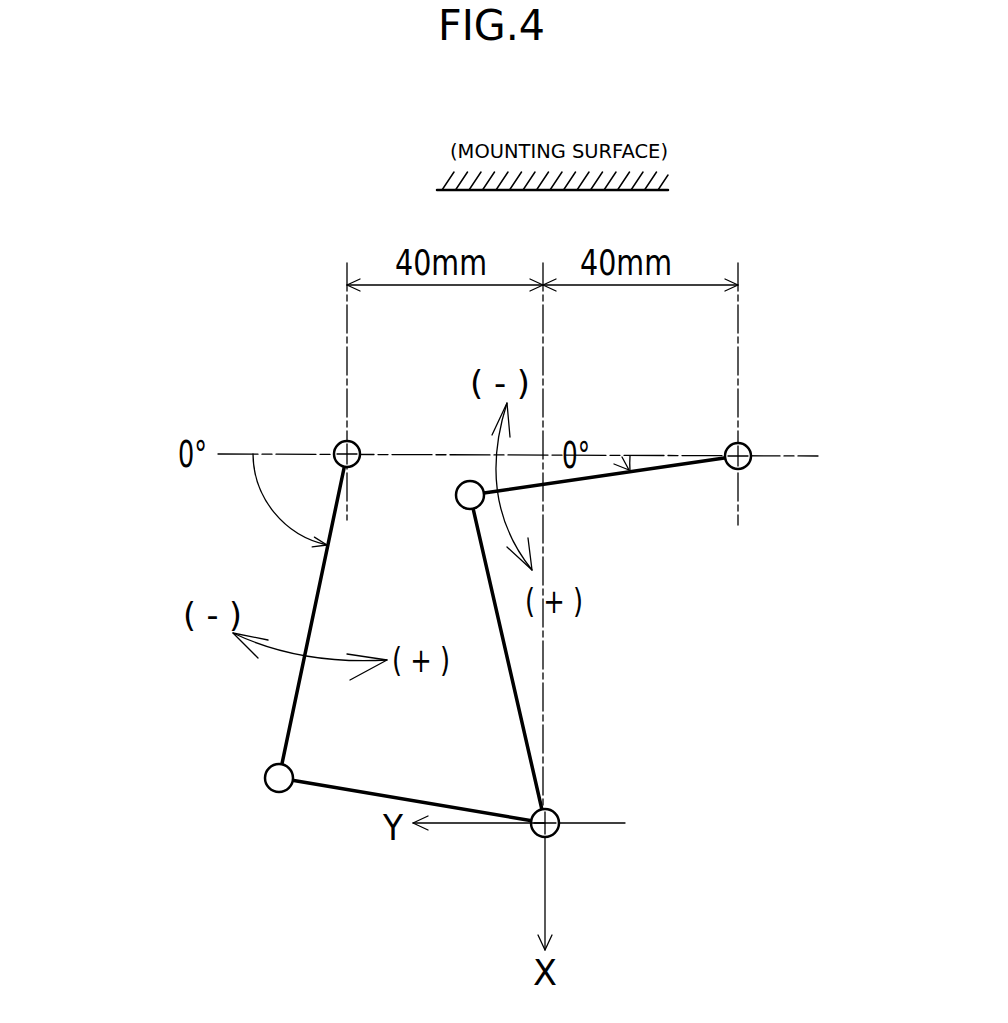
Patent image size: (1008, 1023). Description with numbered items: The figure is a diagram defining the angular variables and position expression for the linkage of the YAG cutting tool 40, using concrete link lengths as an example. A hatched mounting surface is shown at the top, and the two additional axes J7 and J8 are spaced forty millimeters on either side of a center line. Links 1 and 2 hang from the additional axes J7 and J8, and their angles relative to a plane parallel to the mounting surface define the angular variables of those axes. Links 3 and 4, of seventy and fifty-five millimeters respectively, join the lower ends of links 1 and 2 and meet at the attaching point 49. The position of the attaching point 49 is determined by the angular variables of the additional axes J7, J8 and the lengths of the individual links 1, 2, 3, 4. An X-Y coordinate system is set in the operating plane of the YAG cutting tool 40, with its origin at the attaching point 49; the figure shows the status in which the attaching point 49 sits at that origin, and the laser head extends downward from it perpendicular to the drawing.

The YAG cutting tool 40 is at (467, 575).
The attaching point 49 is at (559, 833).
The link 1 is at (293, 698).
The link 2 is at (663, 469).
The link 3 is at (527, 722).
The link 4 is at (370, 793).
The additional axis J7 is at (318, 391).
The additional axis J8 is at (766, 436).